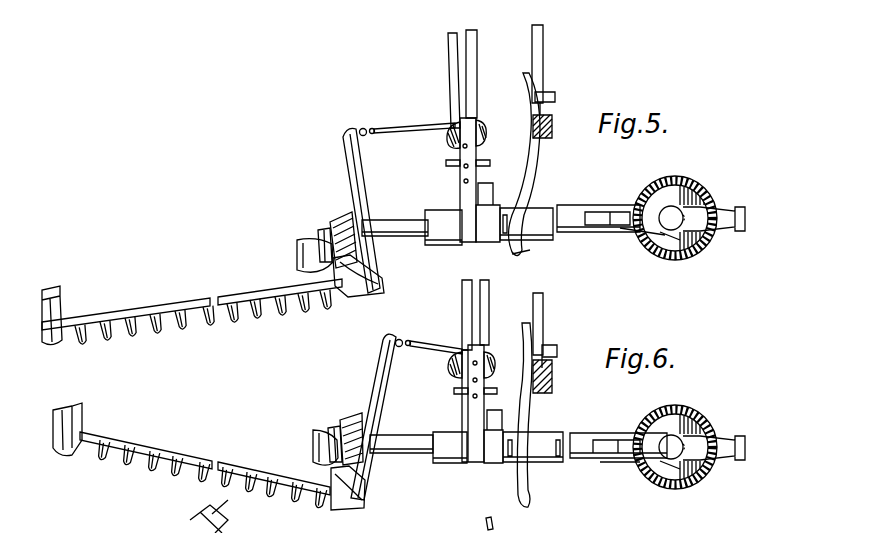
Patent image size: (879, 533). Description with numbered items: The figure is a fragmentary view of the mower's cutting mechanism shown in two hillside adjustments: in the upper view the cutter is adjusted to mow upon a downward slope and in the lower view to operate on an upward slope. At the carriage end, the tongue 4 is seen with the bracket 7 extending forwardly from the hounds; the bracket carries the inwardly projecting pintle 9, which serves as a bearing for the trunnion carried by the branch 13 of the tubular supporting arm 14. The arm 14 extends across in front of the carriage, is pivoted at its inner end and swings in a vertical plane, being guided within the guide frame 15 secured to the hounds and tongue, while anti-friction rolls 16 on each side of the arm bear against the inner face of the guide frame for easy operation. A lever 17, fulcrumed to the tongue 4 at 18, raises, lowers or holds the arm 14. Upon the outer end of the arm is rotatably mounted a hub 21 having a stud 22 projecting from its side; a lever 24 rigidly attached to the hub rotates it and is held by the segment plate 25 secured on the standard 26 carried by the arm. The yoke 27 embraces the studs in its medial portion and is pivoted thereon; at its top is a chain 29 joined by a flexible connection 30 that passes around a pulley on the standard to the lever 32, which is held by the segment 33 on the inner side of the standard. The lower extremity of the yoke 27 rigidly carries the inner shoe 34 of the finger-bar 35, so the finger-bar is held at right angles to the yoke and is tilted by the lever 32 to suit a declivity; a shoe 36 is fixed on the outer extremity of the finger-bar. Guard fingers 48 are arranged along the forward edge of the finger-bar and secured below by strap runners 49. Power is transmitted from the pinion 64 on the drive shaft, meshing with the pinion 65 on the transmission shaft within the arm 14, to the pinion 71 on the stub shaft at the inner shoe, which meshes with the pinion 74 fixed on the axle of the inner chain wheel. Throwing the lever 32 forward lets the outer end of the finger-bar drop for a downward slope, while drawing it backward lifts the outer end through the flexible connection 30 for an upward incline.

In FIG. 5, the tongue 4 is at (552, 122).
In FIG. 6, the tongue 4 is at (553, 378).
In FIG. 5, the bracket 7 is at (745, 218).
In FIG. 6, the bracket 7 is at (745, 446).
In FIG. 5, the pintle 9 is at (652, 270).
In FIG. 6, the pintle 9 is at (666, 466).
In FIG. 5, the branch 13 is at (641, 242).
In FIG. 6, the branch 13 is at (620, 462).
In FIG. 5, the supporting arm 14 is at (575, 210).
In FIG. 6, the supporting arm 14 is at (578, 434).
In FIG. 5, the guide frame 15 is at (530, 168).
In FIG. 6, the guide frame 15 is at (532, 418).
In FIG. 5, the anti-friction rolls 16 is at (540, 214).
In FIG. 6, the anti-friction rolls 16 is at (502, 464).
In FIG. 5, the lever 17 is at (543, 60).
In FIG. 6, the lever 17 is at (543, 320).
In FIG. 5, the fulcrum 18 is at (556, 96).
In FIG. 6, the fulcrum 18 is at (557, 355).
In FIG. 5, the hub 21 is at (445, 248).
In FIG. 6, the hub 21 is at (447, 466).
In FIG. 5, the stud 22 is at (389, 222).
In FIG. 6, the stud 22 is at (405, 436).
In FIG. 5, the lever 24 is at (450, 86).
In FIG. 6, the lever 24 is at (462, 300).
In FIG. 5, the segment plate 25 is at (446, 165).
In FIG. 6, the segment plate 25 is at (454, 391).
In FIG. 5, the standard 26 is at (447, 145).
In FIG. 6, the standard 26 is at (458, 358).
In FIG. 5, the yoke 27 is at (356, 165).
In FIG. 6, the yoke 27 is at (381, 387).
In FIG. 5, the chain 29 is at (364, 128).
In FIG. 6, the chain 29 is at (402, 340).
In FIG. 5, the flexible connection 30 is at (400, 127).
In FIG. 6, the flexible connection 30 is at (430, 348).
In FIG. 5, the lever 32 is at (478, 75).
In FIG. 6, the lever 32 is at (490, 306).
In FIG. 5, the segment 33 is at (490, 163).
In FIG. 6, the segment 33 is at (497, 391).
In FIG. 5, the inner shoe 34 is at (346, 298).
In FIG. 6, the inner shoe 34 is at (350, 505).
In FIG. 5, the finger-bar 35 is at (172, 314).
In FIG. 6, the finger-bar 35 is at (178, 470).
In FIG. 5, the outer shoe 36 is at (57, 346).
In FIG. 6, the outer shoe 36 is at (60, 458).
In FIG. 5, the guard fingers 48 is at (165, 338).
In FIG. 6, the guard fingers 48 is at (128, 473).
In FIG. 5, the strap runners 49 is at (118, 338).
In FIG. 6, the strap runners 49 is at (167, 475).
In FIG. 5, the pinion 64 is at (696, 192).
In FIG. 6, the pinion 64 is at (695, 420).
In FIG. 5, the pinion 65 is at (720, 207).
In FIG. 6, the pinion 65 is at (720, 439).
In FIG. 5, the pinion 71 is at (334, 214).
In FIG. 6, the pinion 71 is at (349, 418).
In FIG. 5, the pinion 74 is at (312, 262).
In FIG. 6, the pinion 74 is at (315, 448).